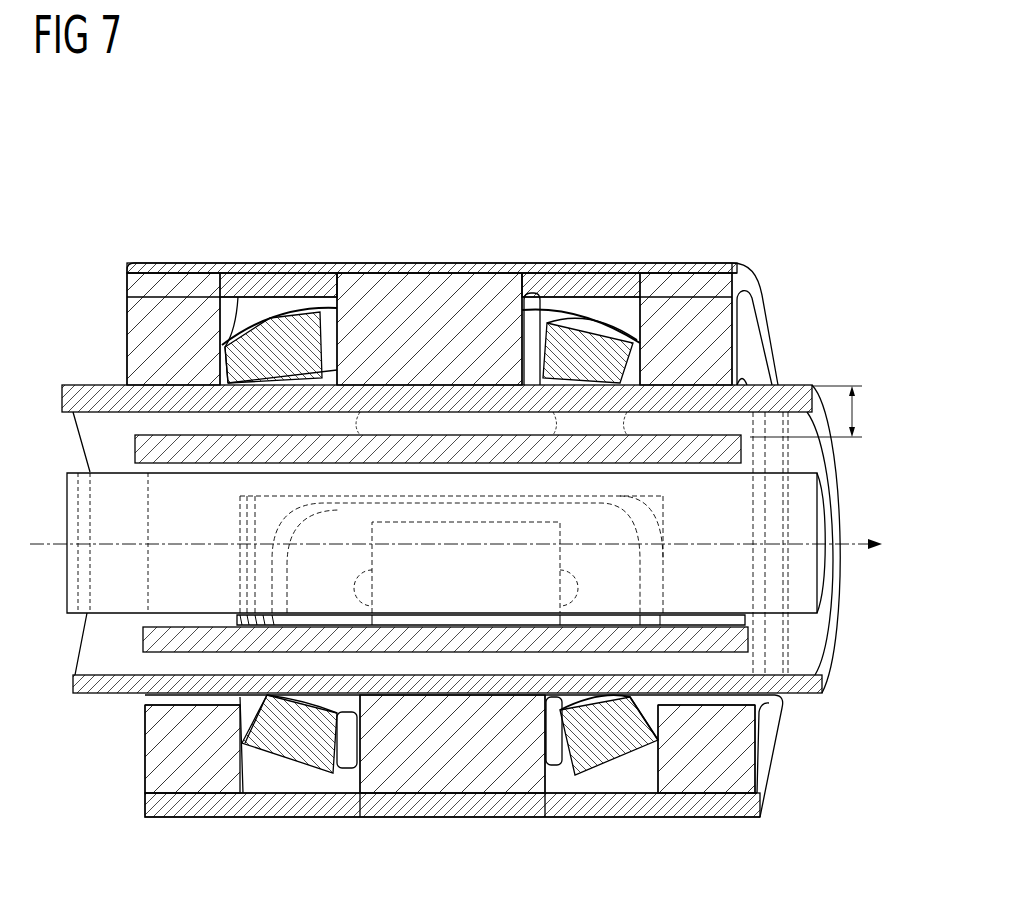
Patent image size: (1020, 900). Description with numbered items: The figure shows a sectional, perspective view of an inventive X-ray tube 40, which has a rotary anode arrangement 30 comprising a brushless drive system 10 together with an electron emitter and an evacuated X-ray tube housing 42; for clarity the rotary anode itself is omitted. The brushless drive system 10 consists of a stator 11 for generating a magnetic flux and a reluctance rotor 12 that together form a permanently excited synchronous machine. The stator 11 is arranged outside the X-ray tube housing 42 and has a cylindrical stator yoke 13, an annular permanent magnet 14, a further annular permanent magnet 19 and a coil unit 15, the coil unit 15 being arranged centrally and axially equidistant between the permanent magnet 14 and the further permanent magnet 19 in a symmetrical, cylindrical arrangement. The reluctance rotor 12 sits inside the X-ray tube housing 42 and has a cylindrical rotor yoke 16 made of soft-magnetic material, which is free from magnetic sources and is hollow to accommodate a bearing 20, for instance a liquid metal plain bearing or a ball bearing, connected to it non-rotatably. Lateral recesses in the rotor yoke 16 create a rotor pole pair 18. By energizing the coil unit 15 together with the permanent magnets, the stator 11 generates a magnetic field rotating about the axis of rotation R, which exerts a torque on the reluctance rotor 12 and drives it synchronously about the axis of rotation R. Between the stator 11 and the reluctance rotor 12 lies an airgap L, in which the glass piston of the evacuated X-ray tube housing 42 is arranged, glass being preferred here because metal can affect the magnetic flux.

The brushless drive system 10 is at (473, 493).
The rotary anode arrangement 30 is at (473, 493).
The X-ray tube 40 is at (218, 176).
The stator 11 is at (798, 280).
The reluctance rotor 12 is at (406, 693).
The stator yoke 13 is at (401, 283).
The annular permanent magnet 14 is at (130, 320).
The coil unit 15 is at (618, 428).
The rotor yoke 16 is at (153, 637).
The rotor pole pair 18 is at (437, 452).
The further annular permanent magnet 19 is at (752, 324).
The bearing 20 is at (124, 490).
The X-ray tube housing 42 is at (795, 394).
The axis of rotation R is at (63, 543).
The airgap L is at (858, 410).